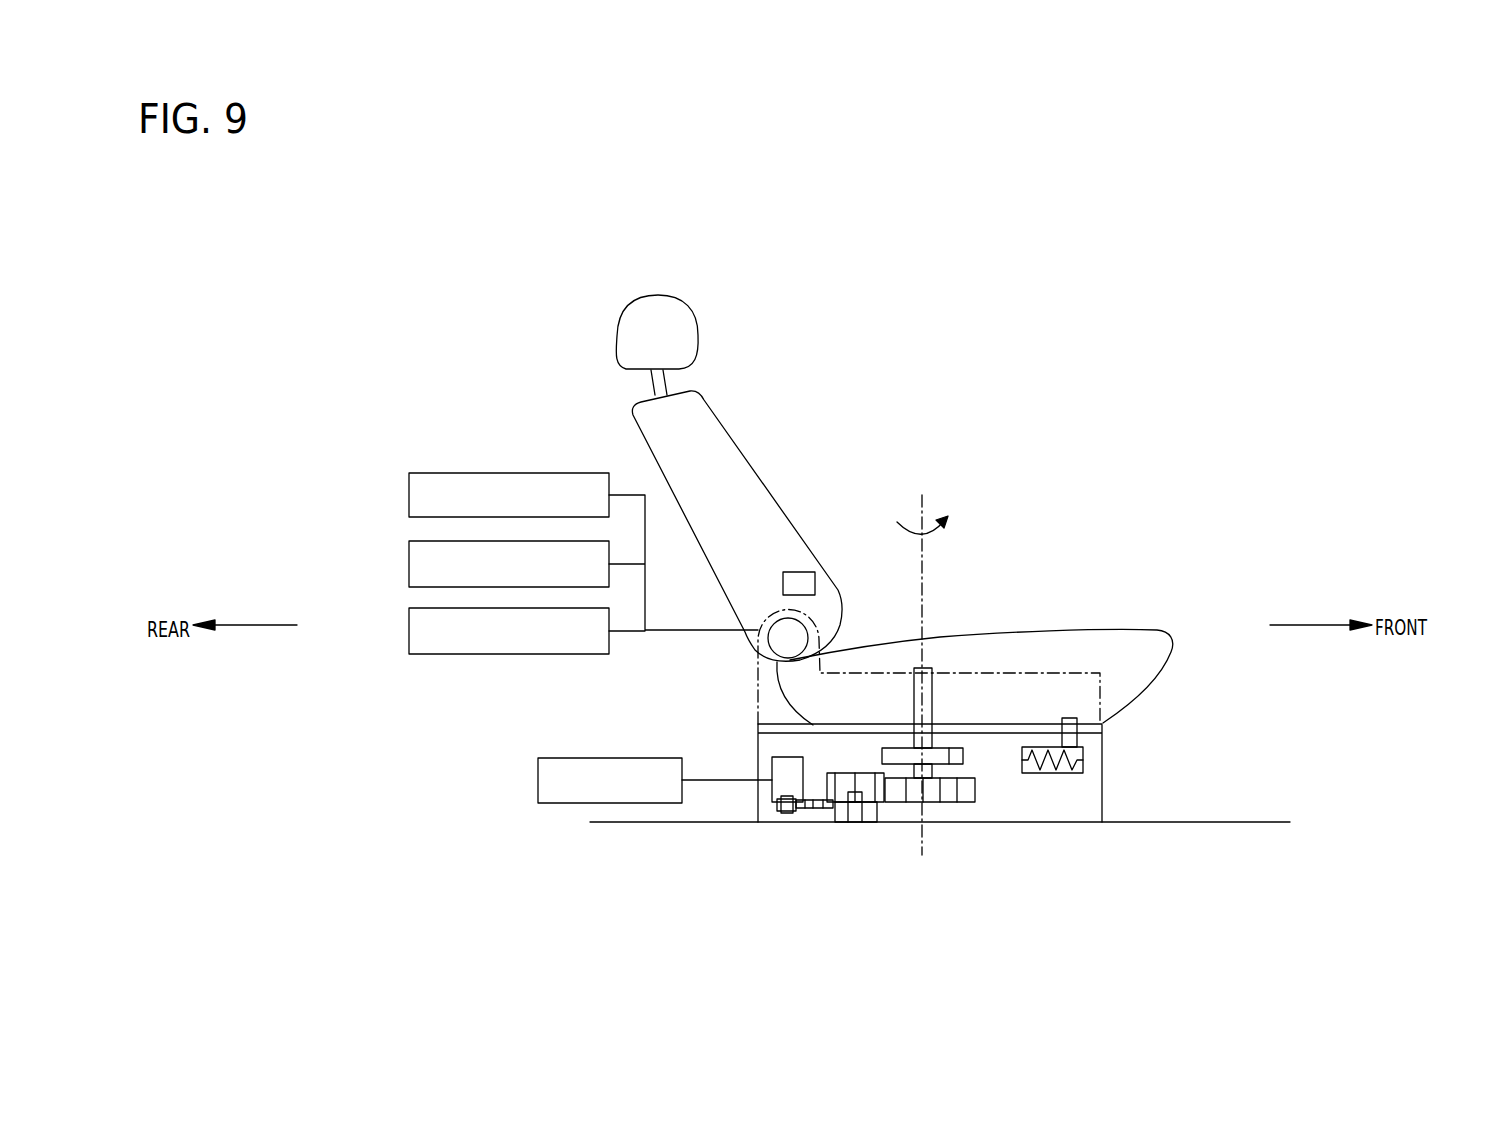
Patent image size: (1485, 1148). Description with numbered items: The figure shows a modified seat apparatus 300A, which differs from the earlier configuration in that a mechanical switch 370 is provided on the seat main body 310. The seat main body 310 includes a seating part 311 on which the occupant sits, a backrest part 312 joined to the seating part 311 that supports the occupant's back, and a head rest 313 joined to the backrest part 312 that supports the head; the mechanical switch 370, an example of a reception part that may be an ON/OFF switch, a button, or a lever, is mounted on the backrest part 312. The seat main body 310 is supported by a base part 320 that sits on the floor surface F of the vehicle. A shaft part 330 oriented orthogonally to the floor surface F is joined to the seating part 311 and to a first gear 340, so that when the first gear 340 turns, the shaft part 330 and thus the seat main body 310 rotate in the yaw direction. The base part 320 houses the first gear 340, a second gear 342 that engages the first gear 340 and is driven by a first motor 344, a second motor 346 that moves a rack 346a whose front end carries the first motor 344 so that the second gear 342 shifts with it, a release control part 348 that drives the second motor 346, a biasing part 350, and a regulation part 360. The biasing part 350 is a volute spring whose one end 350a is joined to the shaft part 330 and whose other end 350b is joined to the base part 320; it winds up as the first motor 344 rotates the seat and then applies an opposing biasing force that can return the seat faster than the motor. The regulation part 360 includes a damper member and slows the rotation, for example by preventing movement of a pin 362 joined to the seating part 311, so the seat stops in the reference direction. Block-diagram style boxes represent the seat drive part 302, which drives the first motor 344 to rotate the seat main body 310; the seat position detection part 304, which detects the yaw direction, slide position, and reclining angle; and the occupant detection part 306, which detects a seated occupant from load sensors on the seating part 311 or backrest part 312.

The seat apparatus 300A is at (1087, 202).
The seat drive part 302 is at (409, 495).
The seat position detection part 304 is at (409, 563).
The occupant detection part 306 is at (409, 630).
The seat main body 310 is at (1052, 402).
The seating part 311 is at (1103, 630).
The backrest part 312 is at (795, 497).
The head rest 313 is at (695, 322).
The base part 320 is at (1103, 757).
The shaft part 330 is at (925, 668).
The first gear 340 is at (977, 798).
The second gear 342 is at (845, 773).
The first motor 344 is at (882, 822).
The second motor 346 is at (772, 790).
The rack 346a is at (808, 808).
The release control part 348 is at (538, 780).
The biasing part 350 is at (880, 748).
The one end of the biasing part 350a is at (928, 755).
The other end of the biasing part 350b is at (963, 758).
The regulation part 360 is at (1050, 773).
The pin 362 is at (1078, 718).
The mechanical switch 370 is at (815, 583).
The floor surface F is at (1268, 820).